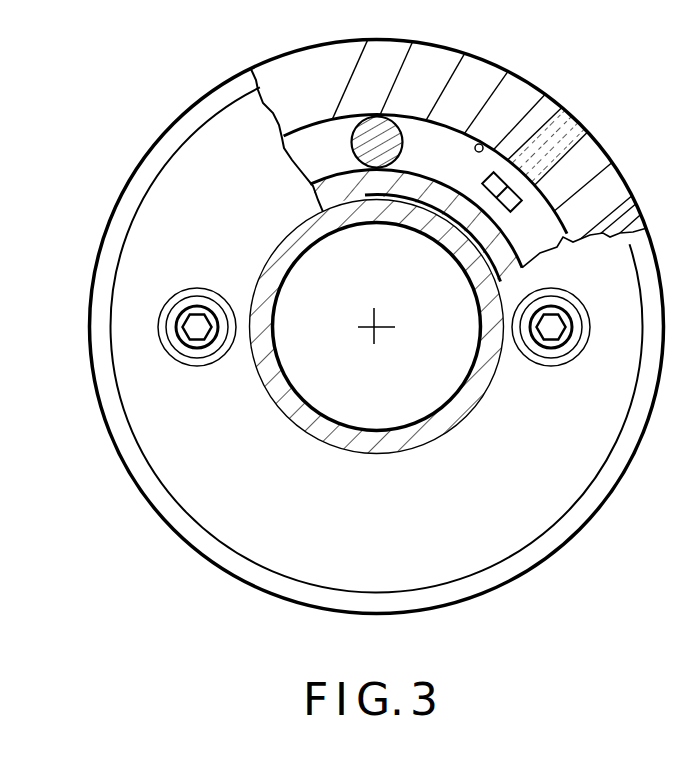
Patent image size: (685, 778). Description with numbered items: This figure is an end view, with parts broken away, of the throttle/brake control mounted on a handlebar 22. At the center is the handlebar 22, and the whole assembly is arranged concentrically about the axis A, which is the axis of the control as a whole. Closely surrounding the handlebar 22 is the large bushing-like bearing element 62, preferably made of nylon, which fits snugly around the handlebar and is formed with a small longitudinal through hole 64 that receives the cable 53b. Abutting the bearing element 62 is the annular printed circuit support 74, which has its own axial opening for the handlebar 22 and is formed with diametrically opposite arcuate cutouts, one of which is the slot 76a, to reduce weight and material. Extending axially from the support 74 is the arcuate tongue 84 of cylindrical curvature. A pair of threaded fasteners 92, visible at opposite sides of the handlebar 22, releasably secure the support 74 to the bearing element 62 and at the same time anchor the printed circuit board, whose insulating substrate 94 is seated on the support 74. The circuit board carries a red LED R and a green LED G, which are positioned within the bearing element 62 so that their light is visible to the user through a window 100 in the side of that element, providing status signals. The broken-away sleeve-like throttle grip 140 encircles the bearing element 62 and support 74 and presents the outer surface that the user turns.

The handlebar 22 is at (288, 271).
The cable 53b is at (396, 146).
The bearing element 62 is at (213, 137).
The longitudinal through hole 64 is at (357, 152).
The printed circuit support 74 is at (419, 60).
The arcuate cutout 76a is at (479, 144).
The arcuate tongue 84 is at (336, 199).
The threaded fasteners 92 is at (217, 292).
The insulating substrate 94 is at (618, 188).
The window 100 is at (574, 124).
The throttle grip 140 is at (336, 61).
The red LED R is at (490, 182).
The green LED G is at (507, 202).
The axis A is at (379, 323).